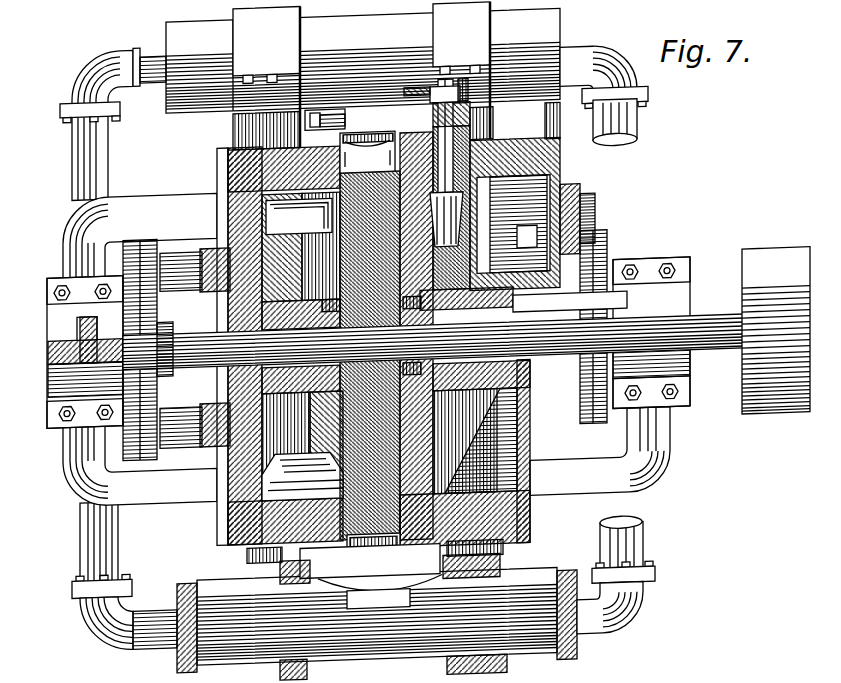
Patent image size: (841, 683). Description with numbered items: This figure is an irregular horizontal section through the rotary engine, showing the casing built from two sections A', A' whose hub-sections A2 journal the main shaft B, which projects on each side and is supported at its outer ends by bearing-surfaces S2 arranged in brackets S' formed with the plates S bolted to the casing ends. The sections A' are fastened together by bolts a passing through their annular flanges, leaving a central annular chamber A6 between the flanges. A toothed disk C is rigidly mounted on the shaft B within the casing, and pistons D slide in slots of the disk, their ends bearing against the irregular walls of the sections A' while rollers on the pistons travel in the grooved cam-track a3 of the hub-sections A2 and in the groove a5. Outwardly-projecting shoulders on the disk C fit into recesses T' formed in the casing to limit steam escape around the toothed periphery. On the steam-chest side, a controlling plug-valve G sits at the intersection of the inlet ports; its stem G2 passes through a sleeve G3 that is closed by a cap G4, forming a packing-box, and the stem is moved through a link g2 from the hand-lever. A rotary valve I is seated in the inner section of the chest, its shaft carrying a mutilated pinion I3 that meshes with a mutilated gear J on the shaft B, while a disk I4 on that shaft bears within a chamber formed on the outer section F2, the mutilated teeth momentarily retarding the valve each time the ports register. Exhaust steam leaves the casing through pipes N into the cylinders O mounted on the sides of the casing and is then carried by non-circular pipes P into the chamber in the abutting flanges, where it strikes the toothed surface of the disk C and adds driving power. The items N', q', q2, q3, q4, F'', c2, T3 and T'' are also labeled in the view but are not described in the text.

The cylinder O is at (371, 341).
The non-circular pipe P is at (378, 607).
The pipe N is at (359, 341).
The bracket S' is at (353, 345).
The bearing-surface S2 is at (712, 296).
The mutilated gear J is at (157, 305).
The casing section A' is at (348, 346).
The inlet boss N' is at (195, 337).
The piston D is at (302, 346).
The toothed disk C is at (370, 355).
The valve cap q' is at (415, 309).
The recess T' is at (380, 344).
The controlling plug-valve G is at (450, 184).
The link g2 is at (445, 88).
The valve-stem G2 is at (468, 104).
The sleeve G3 is at (470, 128).
The cap G4 is at (493, 120).
The outer section F2 is at (555, 160).
The rotary valve I is at (513, 224).
The mutilated pinion I3 is at (596, 210).
The disk I4 is at (580, 195).
The housing plate F'' is at (570, 302).
The hub-section A2 is at (530, 392).
The port q2 is at (470, 460).
The port q3 is at (355, 480).
The port q4 is at (290, 172).
The plate S is at (539, 454).
The central annular chamber A6 is at (240, 122).
The groove a5 is at (200, 538).
The bolt a is at (312, 107).
The bracket c2 is at (332, 112).
The shaft B is at (740, 360).
The grooved cam-track a3 is at (290, 326).
The valve bracket T3 is at (528, 553).
The valve spring T'' is at (421, 335).